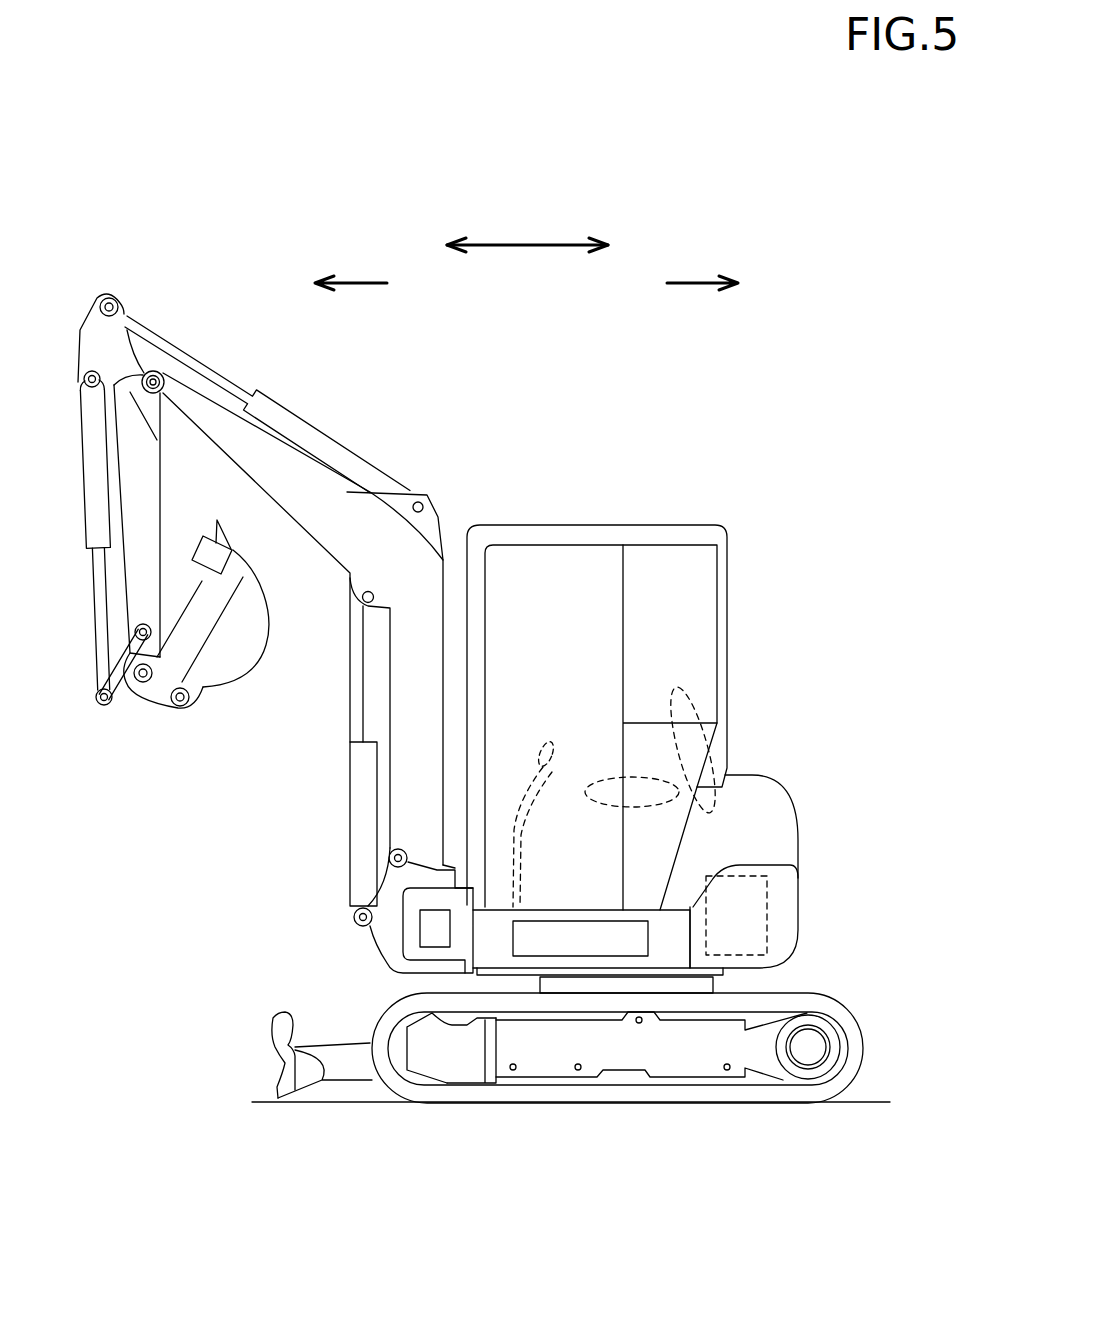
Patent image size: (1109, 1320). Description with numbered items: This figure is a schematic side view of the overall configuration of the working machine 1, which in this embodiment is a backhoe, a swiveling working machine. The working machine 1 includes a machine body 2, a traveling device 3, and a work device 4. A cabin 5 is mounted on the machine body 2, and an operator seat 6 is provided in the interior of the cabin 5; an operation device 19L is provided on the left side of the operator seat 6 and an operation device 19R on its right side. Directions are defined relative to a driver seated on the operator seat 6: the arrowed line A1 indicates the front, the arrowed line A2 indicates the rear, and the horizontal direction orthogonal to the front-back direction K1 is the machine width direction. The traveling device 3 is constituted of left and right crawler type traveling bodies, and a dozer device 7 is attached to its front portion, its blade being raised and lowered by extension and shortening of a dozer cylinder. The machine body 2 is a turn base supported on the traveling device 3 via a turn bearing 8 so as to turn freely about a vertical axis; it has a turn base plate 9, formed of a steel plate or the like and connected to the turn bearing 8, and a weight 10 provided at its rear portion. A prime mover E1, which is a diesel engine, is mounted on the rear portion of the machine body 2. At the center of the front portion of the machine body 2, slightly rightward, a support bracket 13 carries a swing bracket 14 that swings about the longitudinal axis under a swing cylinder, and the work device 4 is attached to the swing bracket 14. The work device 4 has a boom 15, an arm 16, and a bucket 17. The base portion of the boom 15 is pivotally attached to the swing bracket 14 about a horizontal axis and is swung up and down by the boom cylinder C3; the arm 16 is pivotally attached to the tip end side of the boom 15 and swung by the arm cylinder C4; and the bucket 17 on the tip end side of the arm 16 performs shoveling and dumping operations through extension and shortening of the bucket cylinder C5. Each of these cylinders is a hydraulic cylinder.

The working machine 1 is at (814, 581).
The machine body 2 is at (470, 999).
The traveling device 3 is at (872, 1013).
The work device 4 is at (444, 484).
The cabin 5 is at (741, 557).
The operator seat 6 is at (692, 716).
The dozer device 7 is at (345, 1028).
The turn bearing 8 is at (692, 980).
The turn base plate 9 is at (530, 977).
The weight 10 is at (793, 890).
The support bracket 13 is at (437, 896).
The swing bracket 14 is at (370, 945).
The boom 15 is at (373, 530).
The arm 16 is at (148, 494).
The bucket 17 is at (248, 657).
The operation device 19L is at (550, 774).
The operation device 19R is at (548, 740).
The boom cylinder C3 is at (362, 802).
The arm cylinder C4 is at (293, 411).
The bucket cylinder C5 is at (90, 530).
The arrowed line A1 is at (359, 283).
The arrowed line A2 is at (696, 283).
The front-back direction K1 is at (524, 244).
The prime mover E1 is at (767, 918).